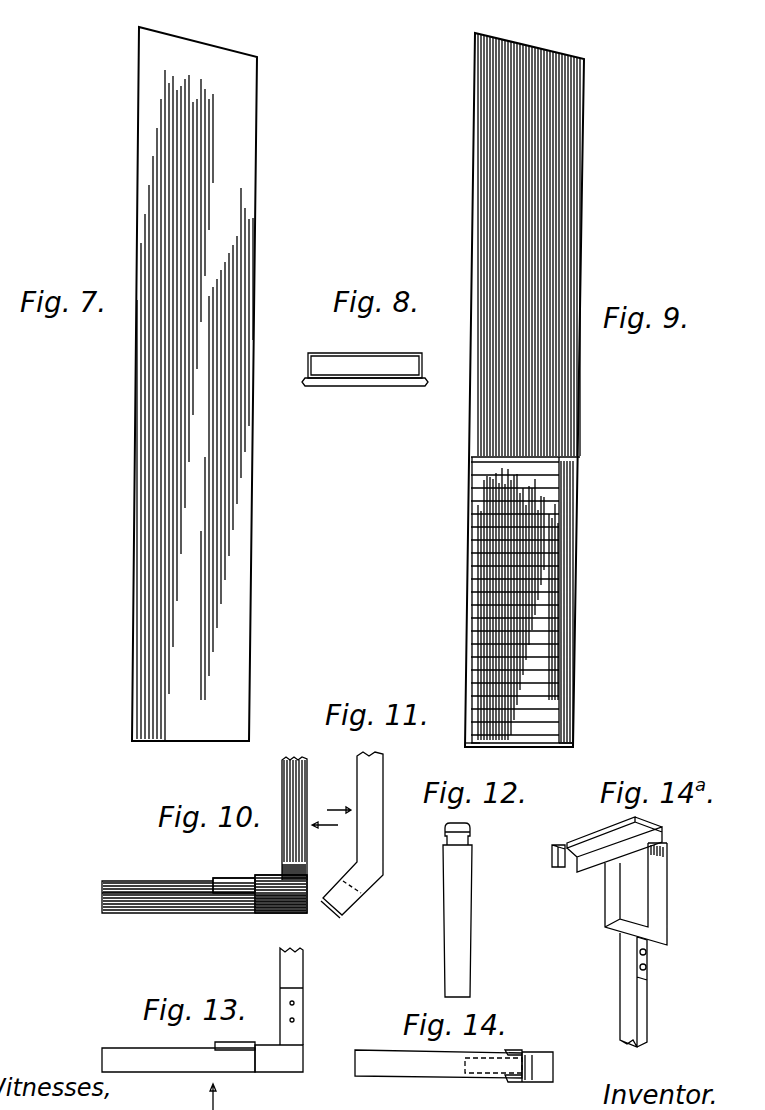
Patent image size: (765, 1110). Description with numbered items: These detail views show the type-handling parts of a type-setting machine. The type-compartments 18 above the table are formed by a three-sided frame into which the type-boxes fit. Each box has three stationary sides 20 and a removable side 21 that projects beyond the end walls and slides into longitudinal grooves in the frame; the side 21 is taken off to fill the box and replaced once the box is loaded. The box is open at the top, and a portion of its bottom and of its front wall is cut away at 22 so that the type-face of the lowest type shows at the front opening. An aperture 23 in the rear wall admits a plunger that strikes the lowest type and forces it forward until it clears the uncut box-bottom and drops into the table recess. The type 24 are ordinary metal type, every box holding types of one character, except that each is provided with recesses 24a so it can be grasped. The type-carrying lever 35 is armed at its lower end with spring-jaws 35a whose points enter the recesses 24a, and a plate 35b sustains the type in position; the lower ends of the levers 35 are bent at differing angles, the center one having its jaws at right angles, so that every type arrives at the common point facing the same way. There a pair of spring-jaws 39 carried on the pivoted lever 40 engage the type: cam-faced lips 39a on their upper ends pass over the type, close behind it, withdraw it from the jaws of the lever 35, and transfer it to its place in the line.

In FIG. 8, the type-compartments 18 is at (365, 366).
In FIG. 8, the stationary sides of the type-box 20 is at (353, 355).
In FIG. 9, the stationary sides of the type-box 20 is at (470, 166).
In FIG. 7, the removable side of the type-box 21 is at (194, 384).
In FIG. 8, the removable side of the type-box 21 is at (380, 384).
In FIG. 9, the cut-away portion of the box bottom and front wall 22 is at (566, 736).
In FIG. 9, the aperture in the rear wall 23 is at (468, 738).
In FIG. 9, the type 24 is at (525, 600).
In FIG. 12, the type 24 is at (470, 912).
In FIG. 13, the type 24 is at (178, 1060).
In FIG. 14, the type 24 is at (438, 1064).
In FIG. 12, the recesses of the type 24a is at (484, 838).
In FIG. 10, the type-carrying lever 35 is at (300, 782).
In FIG. 11, the type-carrying lever 35 is at (352, 835).
In FIG. 13, the type-carrying lever 35 is at (291, 996).
In FIG. 10, the spring-jaws 35a is at (264, 915).
In FIG. 13, the spring-jaws 35a is at (276, 1035).
In FIG. 14, the spring-jaws 35a is at (520, 1083).
In FIG. 10, the plate 35b is at (220, 876).
In FIG. 13, the plate 35b is at (230, 1046).
In FIG. 14A, the spring-jaws 39 is at (635, 820).
In FIG. 14A, the lips 39a is at (556, 870).
In FIG. 14A, the pivoted lever 40 is at (642, 994).